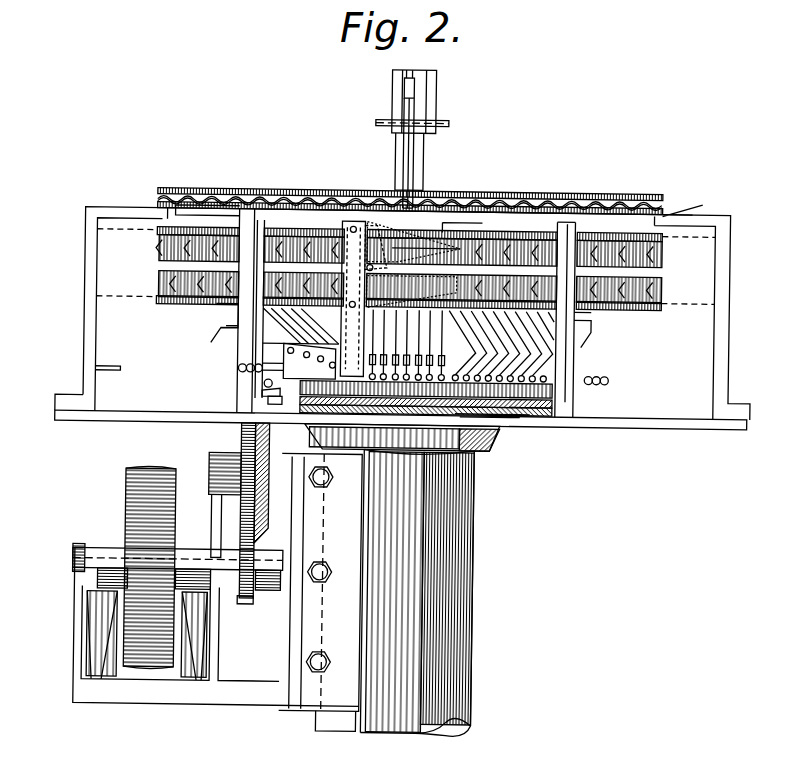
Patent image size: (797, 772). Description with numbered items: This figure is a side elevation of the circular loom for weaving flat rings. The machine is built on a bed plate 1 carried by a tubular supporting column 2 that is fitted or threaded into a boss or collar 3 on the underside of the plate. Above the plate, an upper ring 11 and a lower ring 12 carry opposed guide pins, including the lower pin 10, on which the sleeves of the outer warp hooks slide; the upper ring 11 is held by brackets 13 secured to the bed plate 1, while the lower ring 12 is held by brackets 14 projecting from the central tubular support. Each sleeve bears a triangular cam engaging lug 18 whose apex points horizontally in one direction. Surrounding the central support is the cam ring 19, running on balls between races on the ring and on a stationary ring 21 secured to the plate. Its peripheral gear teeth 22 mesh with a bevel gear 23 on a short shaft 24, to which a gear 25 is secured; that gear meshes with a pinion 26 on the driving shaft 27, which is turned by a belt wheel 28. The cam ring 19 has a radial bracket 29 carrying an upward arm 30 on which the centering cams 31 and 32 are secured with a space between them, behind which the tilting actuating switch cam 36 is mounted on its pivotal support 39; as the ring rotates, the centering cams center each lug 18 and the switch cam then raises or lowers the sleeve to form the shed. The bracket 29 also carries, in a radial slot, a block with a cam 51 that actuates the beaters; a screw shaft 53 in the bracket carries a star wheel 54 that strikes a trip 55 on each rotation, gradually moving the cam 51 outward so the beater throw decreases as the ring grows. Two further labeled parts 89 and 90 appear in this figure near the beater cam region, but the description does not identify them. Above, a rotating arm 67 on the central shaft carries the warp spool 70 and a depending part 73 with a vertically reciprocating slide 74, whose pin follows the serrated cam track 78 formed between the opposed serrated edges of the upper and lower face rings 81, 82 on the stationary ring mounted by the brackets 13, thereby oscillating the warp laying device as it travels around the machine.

The bed plate 1 is at (660, 425).
The supporting device 2 is at (465, 540).
The boss or collar 3 is at (490, 445).
The pin 10 is at (205, 312).
The upper ring 11 is at (157, 232).
The lower ring 12 is at (157, 296).
The brackets 13 is at (83, 303).
The brackets 14 is at (222, 332).
The cam engaging lug 18 is at (305, 232).
The cam ring 19 is at (555, 390).
The stationary ring 21 is at (500, 425).
The gear teeth 22 is at (520, 420).
The bevel gear 23 is at (268, 440).
The short shaft 24 is at (210, 470).
The gear 25 is at (245, 432).
The pinion 26 is at (248, 606).
The driving shaft 27 is at (80, 565).
The belt wheel 28 is at (140, 505).
The bracket 29 is at (426, 397).
The arm 30 is at (351, 298).
The centering cam 31 is at (455, 232).
The centering cam 32 is at (411, 296).
The tilting actuating switch cam 36 is at (420, 232).
The pivotal support 39 is at (381, 222).
The cam 51 is at (309, 362).
The screw shaft 53 is at (294, 391).
The star wheel 54 is at (265, 398).
The trip 55 is at (110, 370).
The arm 67 is at (432, 82).
The spool 70 is at (445, 125).
The depending part 73 is at (418, 105).
The slide 74 is at (410, 155).
The cam track 78 is at (562, 215).
The upper face ring 81 is at (655, 195).
The lower face ring 82 is at (691, 204).
The coils 89 is at (515, 248).
The block 90 is at (423, 373).